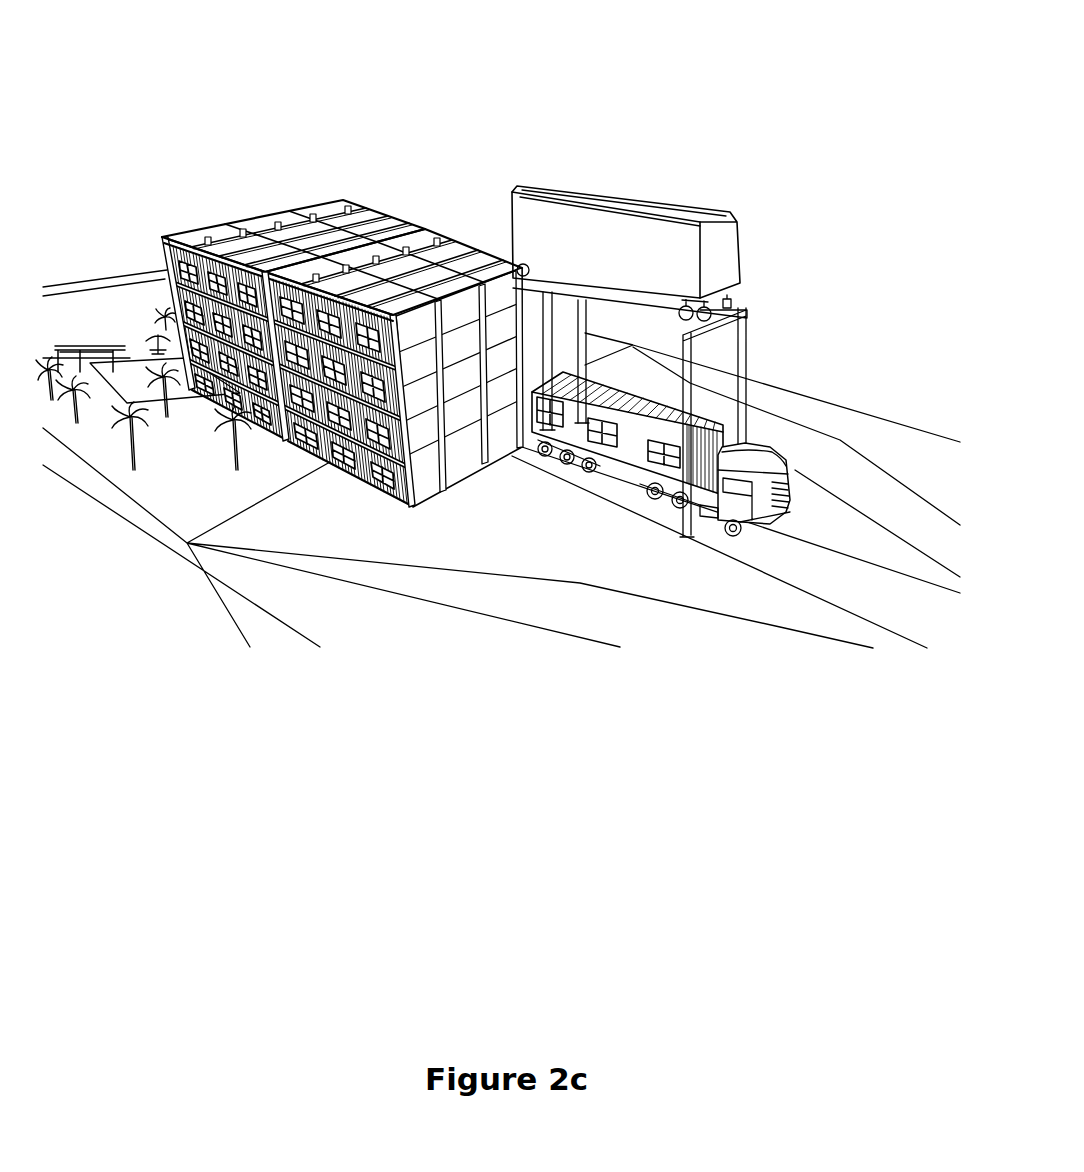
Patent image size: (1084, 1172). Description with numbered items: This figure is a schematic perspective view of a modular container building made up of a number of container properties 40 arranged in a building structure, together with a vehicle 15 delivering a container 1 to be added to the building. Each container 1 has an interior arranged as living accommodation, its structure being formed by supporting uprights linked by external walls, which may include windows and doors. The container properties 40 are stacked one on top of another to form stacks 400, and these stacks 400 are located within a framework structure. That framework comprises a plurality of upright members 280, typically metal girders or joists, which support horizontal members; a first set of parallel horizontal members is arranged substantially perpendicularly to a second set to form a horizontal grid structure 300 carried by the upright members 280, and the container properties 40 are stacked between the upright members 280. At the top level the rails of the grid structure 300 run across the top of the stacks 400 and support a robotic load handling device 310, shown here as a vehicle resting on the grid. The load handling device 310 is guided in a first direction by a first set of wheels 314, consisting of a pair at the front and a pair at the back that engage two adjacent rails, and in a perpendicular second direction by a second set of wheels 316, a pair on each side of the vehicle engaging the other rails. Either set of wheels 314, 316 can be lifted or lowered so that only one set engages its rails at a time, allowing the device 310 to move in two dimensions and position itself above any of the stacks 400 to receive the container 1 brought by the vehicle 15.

The container 1 is at (618, 457).
The truck 15 is at (722, 503).
The container property 40 is at (297, 478).
The upright member 280 is at (282, 392).
The horizontal grid structure 300 is at (430, 233).
The robotic load handling device 310 is at (600, 227).
The first set of wheels 314 is at (728, 303).
The second set of wheels 316 is at (684, 308).
The stack 400 is at (342, 417).